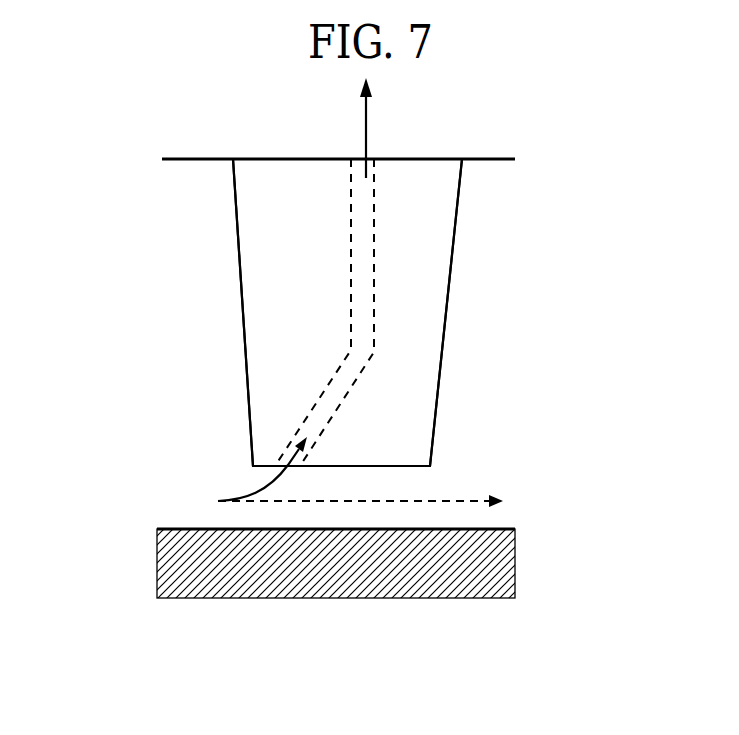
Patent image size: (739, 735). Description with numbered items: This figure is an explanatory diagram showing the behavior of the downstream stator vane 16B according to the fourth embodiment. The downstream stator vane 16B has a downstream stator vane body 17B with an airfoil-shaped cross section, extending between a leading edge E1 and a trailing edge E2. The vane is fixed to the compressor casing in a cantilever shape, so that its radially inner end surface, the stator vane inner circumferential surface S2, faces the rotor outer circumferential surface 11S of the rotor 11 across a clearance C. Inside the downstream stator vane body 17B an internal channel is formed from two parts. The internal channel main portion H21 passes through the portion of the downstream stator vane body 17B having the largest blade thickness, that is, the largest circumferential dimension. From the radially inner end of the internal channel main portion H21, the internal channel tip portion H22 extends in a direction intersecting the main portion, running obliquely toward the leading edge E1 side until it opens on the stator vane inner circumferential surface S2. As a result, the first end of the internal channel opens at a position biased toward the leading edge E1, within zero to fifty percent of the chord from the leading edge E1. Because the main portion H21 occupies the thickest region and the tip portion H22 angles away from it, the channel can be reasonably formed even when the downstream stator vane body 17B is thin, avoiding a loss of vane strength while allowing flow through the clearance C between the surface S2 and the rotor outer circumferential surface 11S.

The downstream stator vane body 17B is at (428, 203).
The downstream stator vane 16B is at (426, 262).
The leading edge E1 is at (243, 303).
The trailing edge E2 is at (447, 315).
The stator vane inner circumferential surface S2 is at (407, 466).
The internal channel tip portion H22 is at (317, 397).
The internal channel main portion H21 is at (375, 327).
The clearance C is at (312, 520).
The rotor 11 is at (483, 570).
The rotor outer circumferential surface 11S is at (480, 529).